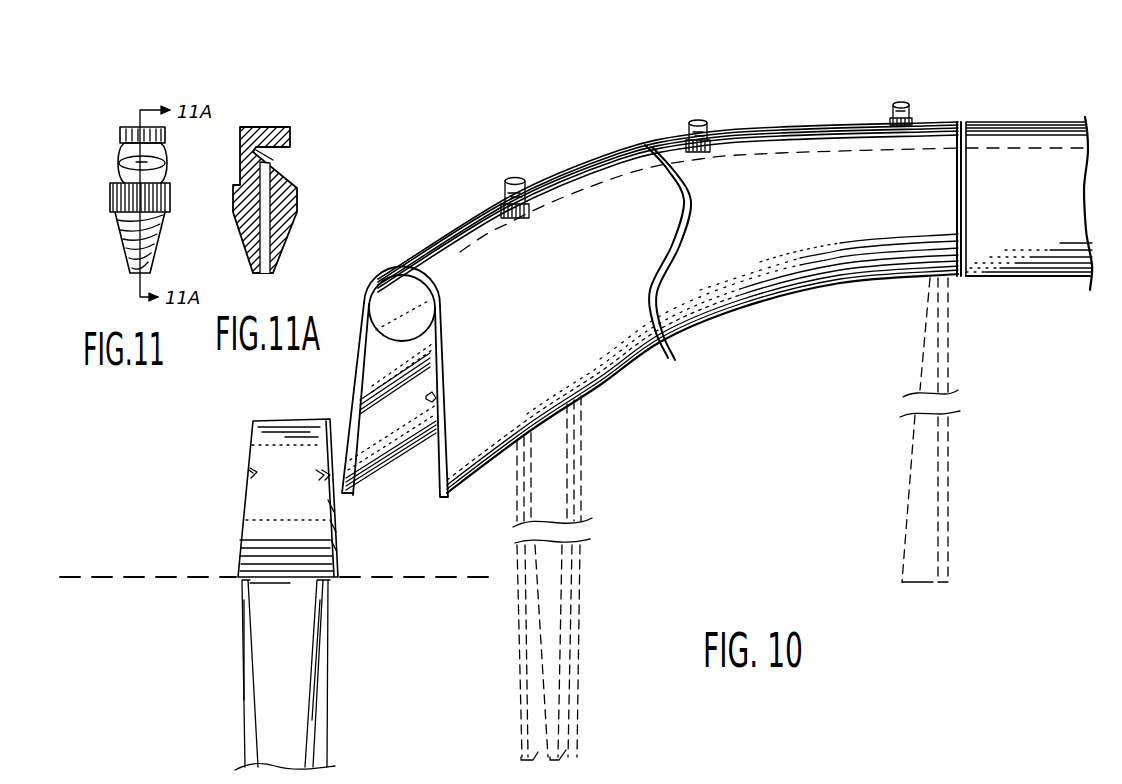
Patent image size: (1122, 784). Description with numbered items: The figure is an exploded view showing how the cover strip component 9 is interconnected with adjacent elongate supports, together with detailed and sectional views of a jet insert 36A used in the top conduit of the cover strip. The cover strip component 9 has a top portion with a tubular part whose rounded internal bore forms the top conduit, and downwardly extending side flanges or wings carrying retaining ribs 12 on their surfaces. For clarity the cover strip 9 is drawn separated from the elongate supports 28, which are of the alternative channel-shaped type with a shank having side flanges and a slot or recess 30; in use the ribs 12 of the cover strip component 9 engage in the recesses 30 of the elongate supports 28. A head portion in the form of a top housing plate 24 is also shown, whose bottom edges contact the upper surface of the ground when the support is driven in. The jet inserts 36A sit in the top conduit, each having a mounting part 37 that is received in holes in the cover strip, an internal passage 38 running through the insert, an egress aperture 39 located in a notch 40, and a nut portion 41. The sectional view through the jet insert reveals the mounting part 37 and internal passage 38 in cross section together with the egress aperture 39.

In FIG. 10, the cover strip component 9 is at (545, 311).
In FIG. 10, the retaining ribs 12 is at (363, 398).
In FIG. 10, the top housing plate 24 is at (277, 533).
In FIG. 10, the elongate support 28 is at (582, 472).
In FIG. 10, the slot or recess 30 is at (247, 474).
In FIG. 10, the jet insert 36A is at (504, 192).
In FIG. 11, the jet insert 36A is at (214, 93).
In FIG. 11A, the mounting part 37 is at (290, 241).
In FIG. 11A, the internal passage 38 is at (250, 249).
In FIG. 11A, the egress aperture 39 is at (274, 159).
In FIG. 11, the notch 40 is at (125, 161).
In FIG. 11, the nut portion 41 is at (110, 200).